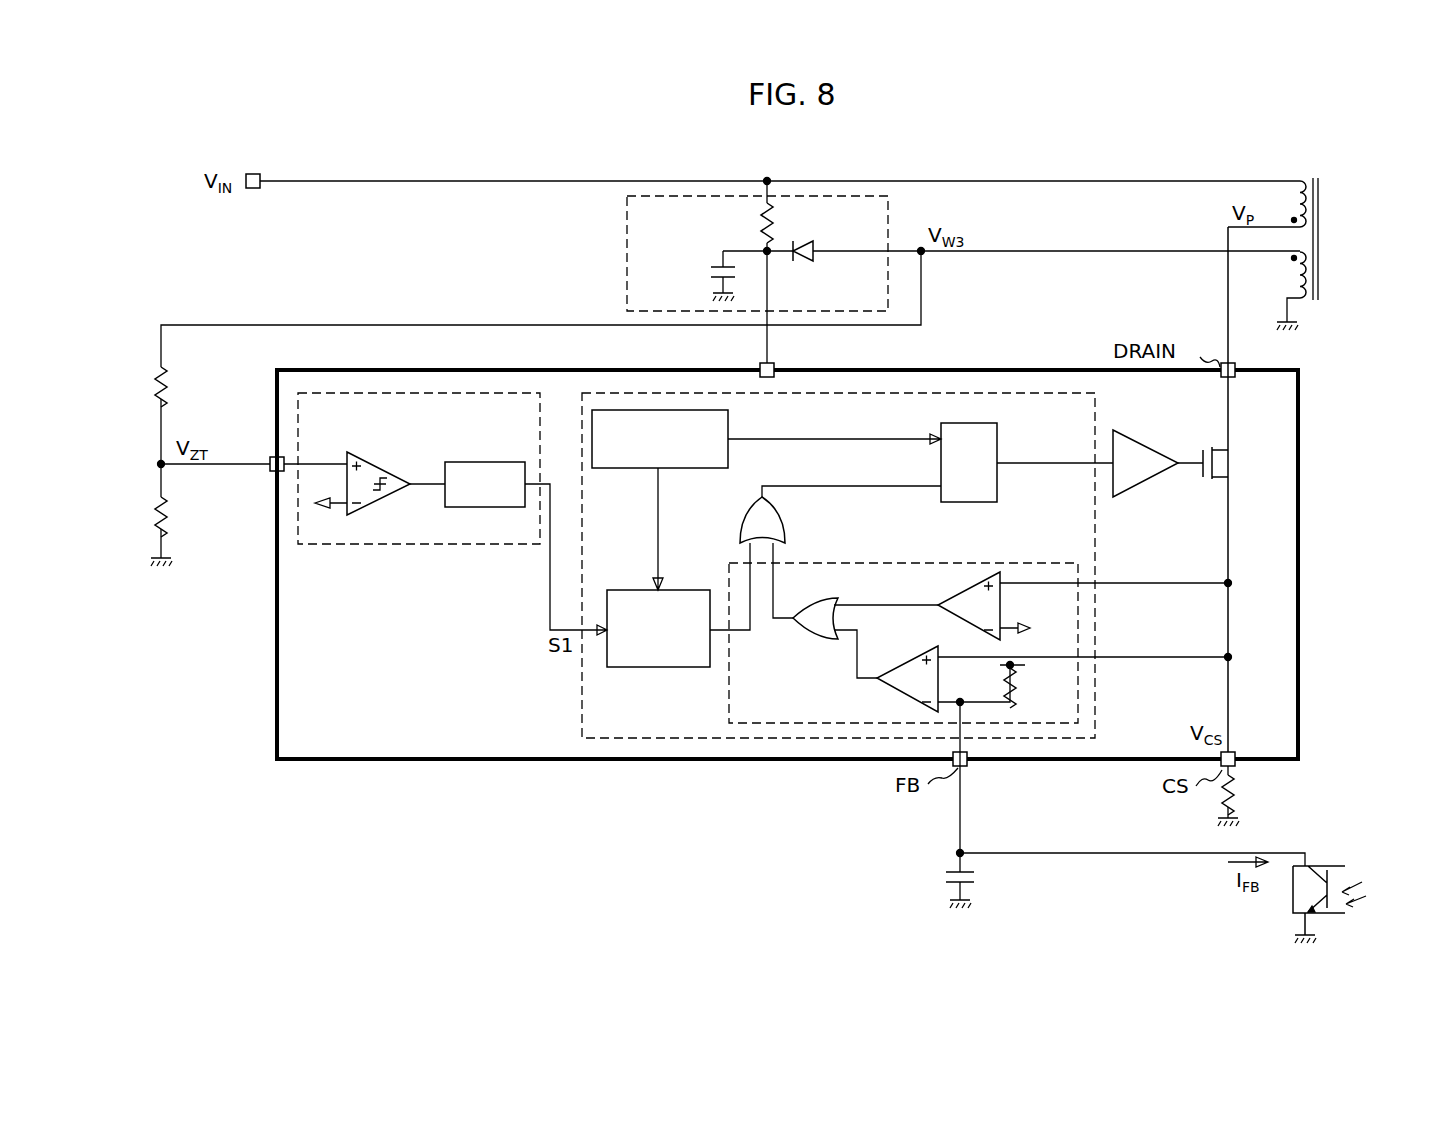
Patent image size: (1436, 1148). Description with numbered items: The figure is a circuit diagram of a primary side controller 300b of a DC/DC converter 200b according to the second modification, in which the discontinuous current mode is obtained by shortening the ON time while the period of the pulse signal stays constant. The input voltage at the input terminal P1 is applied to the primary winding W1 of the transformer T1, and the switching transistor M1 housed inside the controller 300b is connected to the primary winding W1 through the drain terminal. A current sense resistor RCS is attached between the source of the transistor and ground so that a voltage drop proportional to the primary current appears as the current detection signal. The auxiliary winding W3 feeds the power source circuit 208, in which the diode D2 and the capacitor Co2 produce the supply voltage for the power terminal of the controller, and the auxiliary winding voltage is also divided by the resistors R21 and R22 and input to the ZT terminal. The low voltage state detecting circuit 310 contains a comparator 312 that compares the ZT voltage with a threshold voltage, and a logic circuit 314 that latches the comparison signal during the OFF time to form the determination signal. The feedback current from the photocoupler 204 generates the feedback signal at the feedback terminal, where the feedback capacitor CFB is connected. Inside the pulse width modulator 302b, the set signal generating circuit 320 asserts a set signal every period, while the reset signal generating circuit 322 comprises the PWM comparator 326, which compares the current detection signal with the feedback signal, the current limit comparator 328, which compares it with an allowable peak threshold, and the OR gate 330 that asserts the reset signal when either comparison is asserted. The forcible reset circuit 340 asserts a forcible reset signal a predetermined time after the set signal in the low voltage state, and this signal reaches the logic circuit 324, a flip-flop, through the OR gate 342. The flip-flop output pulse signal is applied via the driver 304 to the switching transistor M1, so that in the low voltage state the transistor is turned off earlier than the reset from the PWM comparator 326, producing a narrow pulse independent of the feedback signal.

The DC/DC converter 200b is at (1432, 125).
The primary side controller 300b is at (378, 762).
The pulse width modulator 302b is at (863, 565).
The driver 304 is at (1162, 424).
The low voltage state detecting circuit 310 is at (419, 495).
The comparator 312 is at (380, 440).
The logic circuit 314 is at (492, 440).
The set signal generating circuit 320 is at (628, 468).
The reset signal generating circuit 322 is at (978, 622).
The logic circuit 324 is at (958, 423).
The PWM comparator 326 is at (924, 650).
The current limit comparator 328 is at (968, 588).
The OR gate 330 is at (816, 640).
The forcible reset circuit 340 is at (657, 667).
The OR gate 342 is at (785, 517).
The photocoupler 204 is at (1336, 864).
The power source circuit 208 is at (930, 274).
The input terminal P1 is at (254, 172).
The diode D2 is at (804, 228).
The capacitor Co2 is at (708, 268).
The transformer T1 is at (1293, 216).
The primary winding W1 is at (1305, 178).
The auxiliary winding W3 is at (1285, 282).
The resistor R21 is at (172, 383).
The resistor R22 is at (172, 519).
The voltage detection terminal ZT is at (270, 456).
The switching transistor M1 is at (1238, 466).
The current sense resistor RCS is at (1240, 796).
The feedback capacitor CFB is at (978, 878).